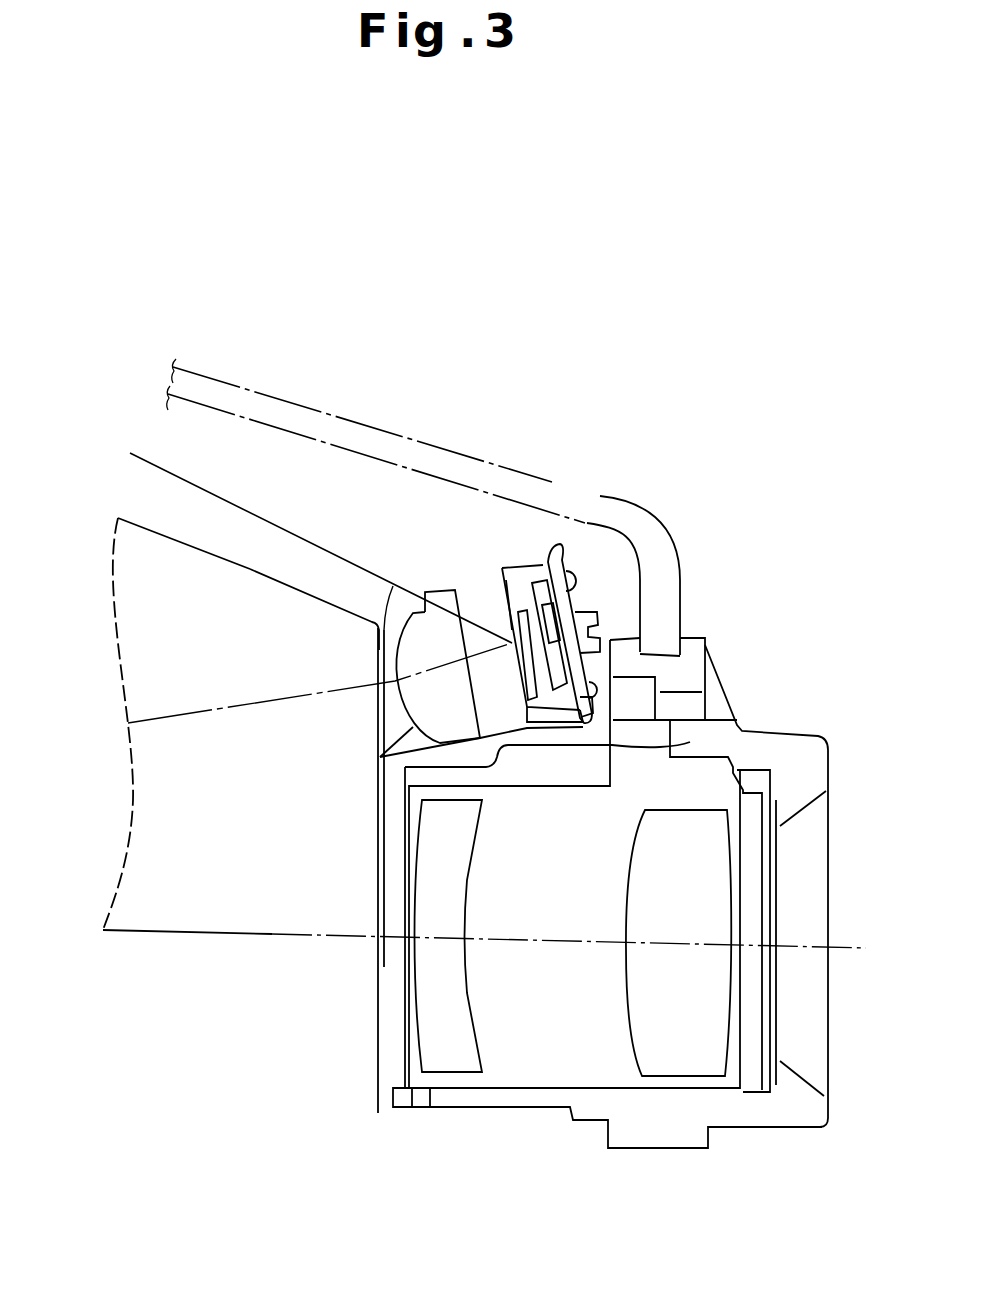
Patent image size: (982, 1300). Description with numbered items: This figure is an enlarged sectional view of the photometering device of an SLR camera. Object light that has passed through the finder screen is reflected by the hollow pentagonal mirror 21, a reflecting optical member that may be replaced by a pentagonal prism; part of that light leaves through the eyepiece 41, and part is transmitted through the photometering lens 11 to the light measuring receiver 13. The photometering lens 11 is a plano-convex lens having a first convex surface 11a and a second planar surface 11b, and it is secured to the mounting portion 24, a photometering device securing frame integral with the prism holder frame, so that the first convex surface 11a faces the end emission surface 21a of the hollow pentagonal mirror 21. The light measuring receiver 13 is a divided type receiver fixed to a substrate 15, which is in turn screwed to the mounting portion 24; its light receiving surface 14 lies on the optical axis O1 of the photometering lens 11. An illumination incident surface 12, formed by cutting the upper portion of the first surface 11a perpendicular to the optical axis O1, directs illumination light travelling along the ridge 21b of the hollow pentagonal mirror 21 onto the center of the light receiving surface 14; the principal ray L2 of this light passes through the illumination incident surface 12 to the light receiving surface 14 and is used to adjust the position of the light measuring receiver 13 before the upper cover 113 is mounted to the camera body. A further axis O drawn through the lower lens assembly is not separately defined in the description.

The upper cover 113 is at (247, 400).
The principal light ray L2 is at (297, 536).
The ridge of the hollow pentagonal mirror 21b is at (143, 525).
The hollow pentagonal mirror 21 is at (252, 612).
The end emission surface 21a is at (377, 617).
The illumination incident surface 12 is at (393, 588).
The photometering lens 11 is at (412, 579).
The first convex surface 11a is at (380, 757).
The second planar surface 11b is at (465, 637).
The light receiving surface 14 is at (526, 575).
The light measuring receiver 13 is at (537, 566).
The substrate 15 is at (553, 555).
The mounting portion 24 is at (690, 742).
The eyepiece 41 is at (811, 724).
The optical axis O1 is at (290, 696).
The optical axis O is at (580, 949).